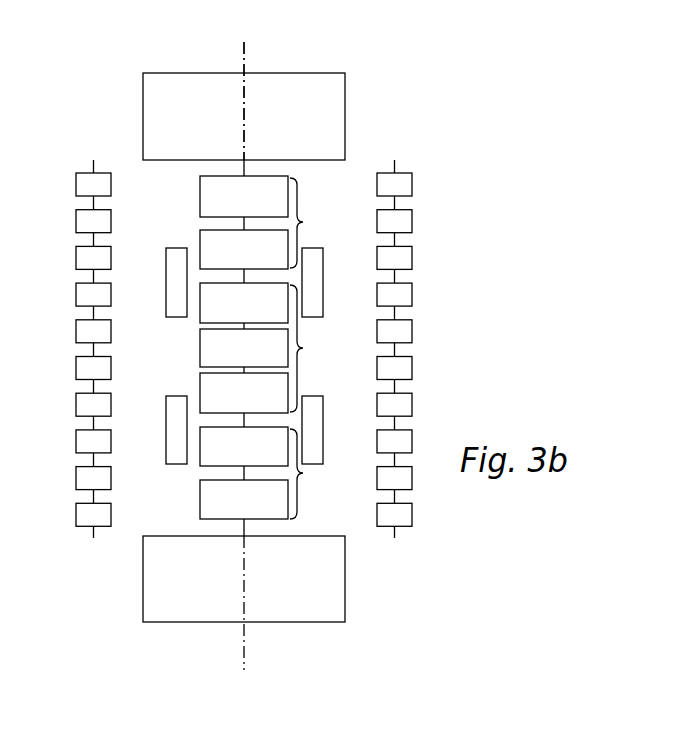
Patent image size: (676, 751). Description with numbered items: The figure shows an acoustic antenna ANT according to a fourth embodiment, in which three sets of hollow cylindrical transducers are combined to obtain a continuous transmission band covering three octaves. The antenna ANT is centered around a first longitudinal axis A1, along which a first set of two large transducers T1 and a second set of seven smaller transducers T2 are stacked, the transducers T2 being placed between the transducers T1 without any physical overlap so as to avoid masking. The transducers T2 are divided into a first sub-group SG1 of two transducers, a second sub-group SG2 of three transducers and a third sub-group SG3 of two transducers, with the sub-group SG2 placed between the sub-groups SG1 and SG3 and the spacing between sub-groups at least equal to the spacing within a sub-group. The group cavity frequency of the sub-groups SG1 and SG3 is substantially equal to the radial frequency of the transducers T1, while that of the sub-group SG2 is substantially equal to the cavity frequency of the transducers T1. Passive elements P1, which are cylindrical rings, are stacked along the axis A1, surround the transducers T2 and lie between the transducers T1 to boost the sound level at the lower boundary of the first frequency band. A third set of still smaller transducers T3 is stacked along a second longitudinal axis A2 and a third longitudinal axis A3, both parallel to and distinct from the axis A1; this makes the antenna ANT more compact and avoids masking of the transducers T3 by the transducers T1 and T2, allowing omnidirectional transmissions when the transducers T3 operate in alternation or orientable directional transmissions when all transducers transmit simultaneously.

The acoustic antenna ANT is at (477, 570).
The first longitudinal axis A1 is at (246, 50).
The second longitudinal axis A2 is at (396, 165).
The third longitudinal axis A3 is at (93, 165).
The hollow cylindrical transducers of the first set T1 is at (345, 115).
The hollow cylindrical transducers of the second set T2 is at (190, 232).
The transducers of the third set T3 is at (76, 257).
The passive elements P1 is at (176, 278).
The first sub-group SG1 is at (305, 222).
The second sub-group SG2 is at (305, 348).
The third sub-group SG3 is at (302, 470).